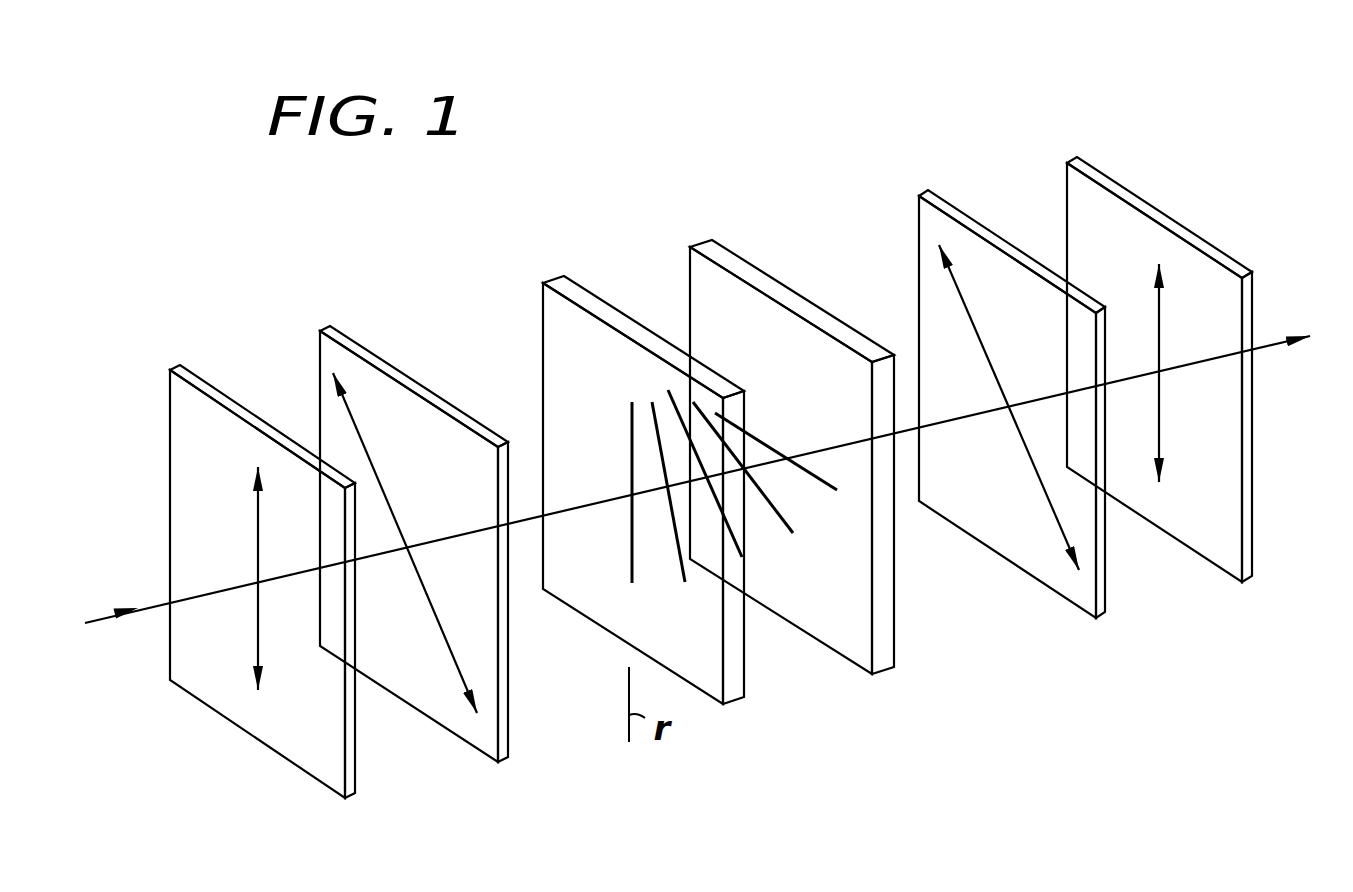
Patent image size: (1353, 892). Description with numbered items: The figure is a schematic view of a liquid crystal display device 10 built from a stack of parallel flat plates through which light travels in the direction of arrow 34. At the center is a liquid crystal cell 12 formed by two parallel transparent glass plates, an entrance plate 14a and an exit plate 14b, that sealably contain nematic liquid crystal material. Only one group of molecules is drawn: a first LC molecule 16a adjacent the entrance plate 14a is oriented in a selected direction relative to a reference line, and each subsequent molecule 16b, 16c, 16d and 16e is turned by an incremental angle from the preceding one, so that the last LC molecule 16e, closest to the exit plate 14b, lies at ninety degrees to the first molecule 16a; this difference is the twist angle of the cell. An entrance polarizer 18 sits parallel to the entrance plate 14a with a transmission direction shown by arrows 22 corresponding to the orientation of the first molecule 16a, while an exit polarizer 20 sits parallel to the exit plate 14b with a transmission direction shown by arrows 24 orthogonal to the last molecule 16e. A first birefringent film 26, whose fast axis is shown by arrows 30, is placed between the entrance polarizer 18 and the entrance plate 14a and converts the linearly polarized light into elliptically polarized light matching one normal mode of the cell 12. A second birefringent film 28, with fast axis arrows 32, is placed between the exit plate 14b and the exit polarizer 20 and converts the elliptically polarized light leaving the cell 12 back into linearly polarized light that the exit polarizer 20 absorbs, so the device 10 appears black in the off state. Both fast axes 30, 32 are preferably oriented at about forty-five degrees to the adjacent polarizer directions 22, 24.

The liquid crystal display device 10 is at (399, 222).
The liquid crystal cell 12 is at (700, 224).
The first or entrance plate 14a is at (543, 309).
The second or exit plate 14b is at (760, 270).
The first LC molecule 16a is at (628, 517).
The second LC molecule 16b is at (678, 547).
The third LC molecule 16c is at (737, 535).
The fourth LC molecule 16d is at (773, 502).
The last LC molecule 16e is at (773, 443).
The front or entrance polarizer 18 is at (204, 385).
The rear or exit polarizer 20 is at (1130, 193).
The transmission direction of entrance polarizer 22 is at (257, 516).
The transmission direction of exit polarizer 24 is at (1159, 395).
The first birefringent film 26 is at (438, 720).
The second birefringent film 28 is at (1019, 570).
The fast axis of first birefringent film 30 is at (418, 586).
The fast axis of second birefringent film 32 is at (1011, 428).
The light propagation direction arrow 34 is at (112, 620).